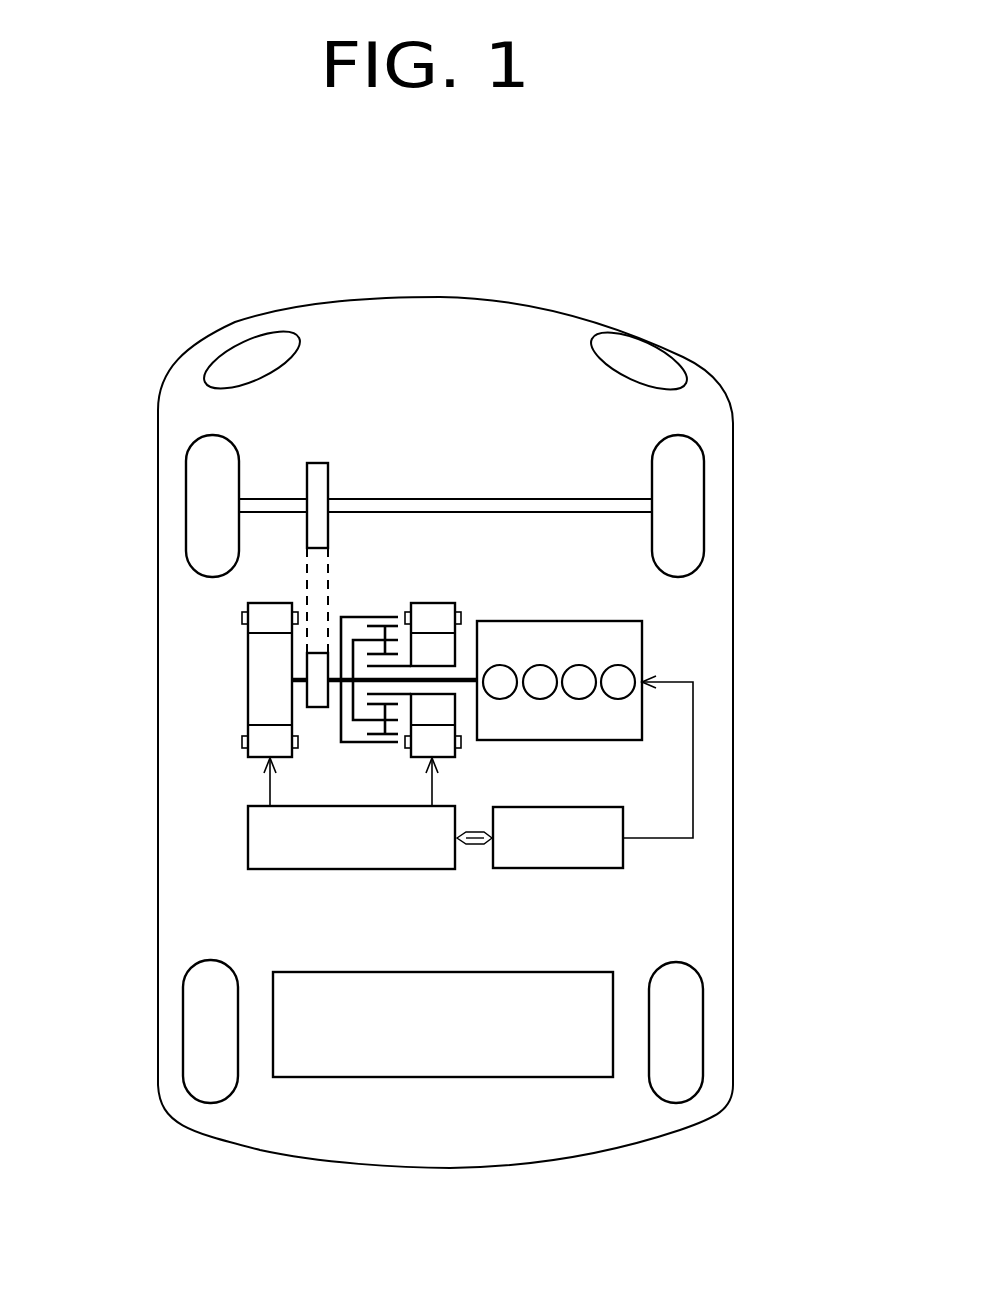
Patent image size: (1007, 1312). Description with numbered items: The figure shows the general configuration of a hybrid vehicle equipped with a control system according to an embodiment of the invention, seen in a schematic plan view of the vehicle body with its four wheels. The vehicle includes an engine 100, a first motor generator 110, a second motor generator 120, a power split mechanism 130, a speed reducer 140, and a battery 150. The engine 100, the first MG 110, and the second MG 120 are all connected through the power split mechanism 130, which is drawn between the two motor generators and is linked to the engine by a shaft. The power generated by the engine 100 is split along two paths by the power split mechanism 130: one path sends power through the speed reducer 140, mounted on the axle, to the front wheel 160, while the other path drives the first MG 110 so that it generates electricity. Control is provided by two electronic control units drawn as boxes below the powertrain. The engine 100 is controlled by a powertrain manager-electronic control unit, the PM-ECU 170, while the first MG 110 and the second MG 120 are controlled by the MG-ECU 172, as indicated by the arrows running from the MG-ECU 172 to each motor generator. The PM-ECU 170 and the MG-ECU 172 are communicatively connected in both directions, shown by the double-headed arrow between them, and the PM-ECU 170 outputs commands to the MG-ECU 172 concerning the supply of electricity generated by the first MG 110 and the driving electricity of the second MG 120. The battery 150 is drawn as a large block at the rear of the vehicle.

The engine 100 is at (565, 621).
The first motor generator 110 is at (432, 603).
The second motor generator 120 is at (248, 680).
The power split mechanism 130 is at (358, 617).
The speed reducer 140 is at (318, 447).
The battery 150 is at (407, 1077).
The front wheel 160 is at (190, 498).
The powertrain manager-electronic control unit (PM-ECU) 170 is at (560, 869).
The MG-ECU 172 is at (248, 838).